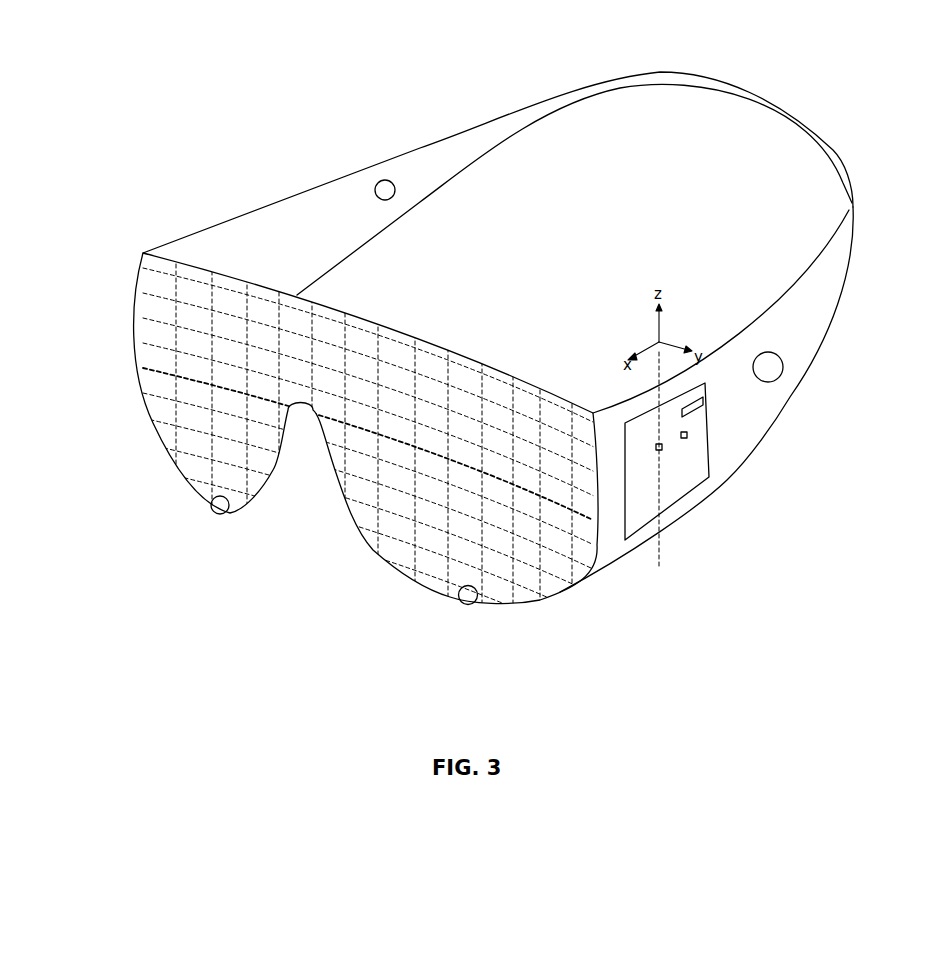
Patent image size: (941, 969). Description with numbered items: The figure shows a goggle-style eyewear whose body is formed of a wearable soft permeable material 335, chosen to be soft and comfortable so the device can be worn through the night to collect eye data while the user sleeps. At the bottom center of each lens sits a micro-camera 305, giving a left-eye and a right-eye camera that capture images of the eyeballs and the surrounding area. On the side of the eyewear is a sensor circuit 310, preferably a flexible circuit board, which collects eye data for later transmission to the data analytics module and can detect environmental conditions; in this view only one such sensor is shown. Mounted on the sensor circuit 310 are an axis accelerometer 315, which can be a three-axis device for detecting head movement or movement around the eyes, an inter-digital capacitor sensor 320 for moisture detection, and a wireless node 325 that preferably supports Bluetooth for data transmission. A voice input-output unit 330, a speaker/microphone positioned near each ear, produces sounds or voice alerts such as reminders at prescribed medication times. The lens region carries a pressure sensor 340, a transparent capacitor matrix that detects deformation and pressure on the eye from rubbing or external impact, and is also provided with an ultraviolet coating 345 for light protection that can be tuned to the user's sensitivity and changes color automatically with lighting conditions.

The micro-camera 305 is at (219, 515).
The sensor circuit 310 is at (637, 515).
The axis accelerometer 315 is at (663, 452).
The inter-digital capacitor sensor 320 is at (690, 440).
The wireless node 325 is at (707, 402).
The voice input-output unit 330 is at (389, 199).
The wearable soft permeable material 335 is at (488, 134).
The pressure sensor 340 is at (197, 380).
The ultraviolet (UV) coating 345 is at (157, 310).